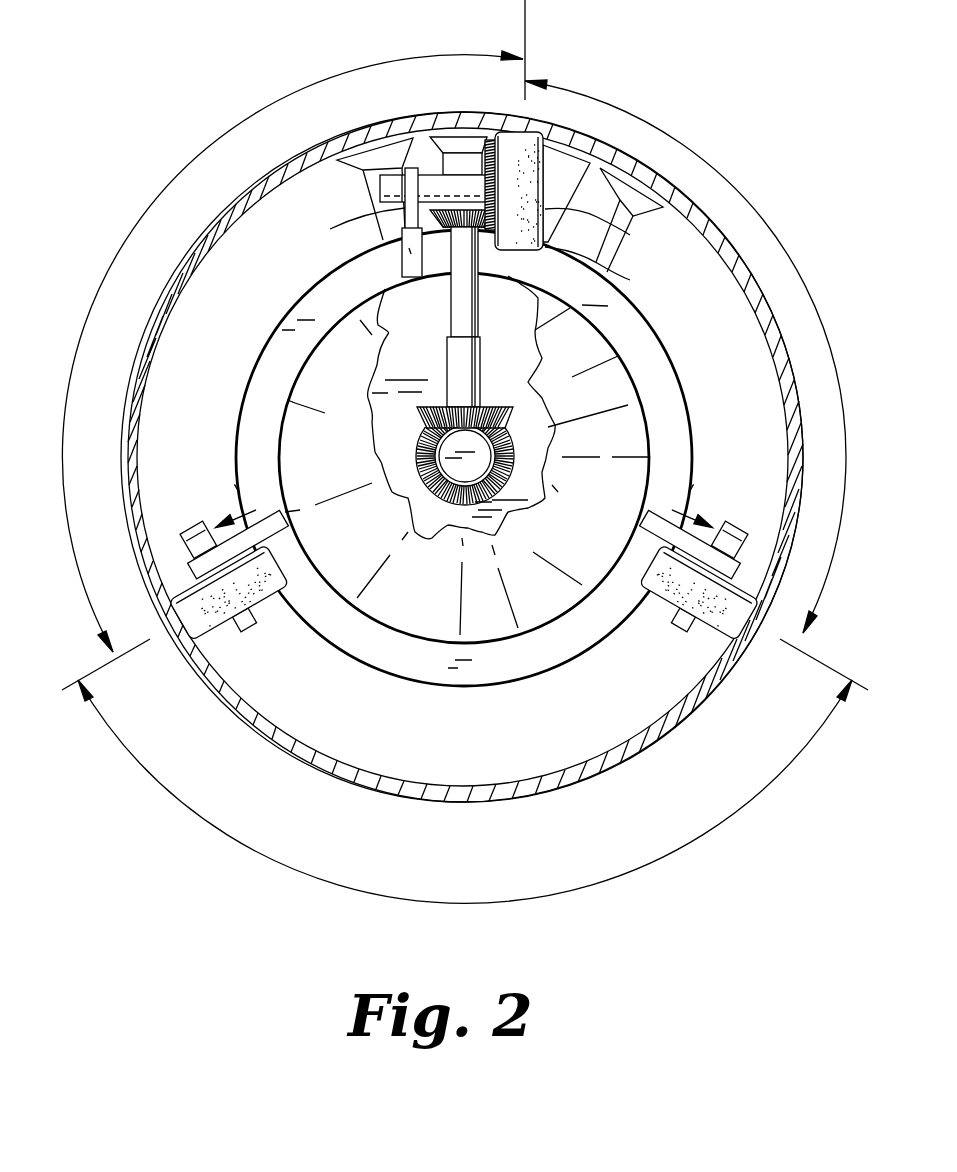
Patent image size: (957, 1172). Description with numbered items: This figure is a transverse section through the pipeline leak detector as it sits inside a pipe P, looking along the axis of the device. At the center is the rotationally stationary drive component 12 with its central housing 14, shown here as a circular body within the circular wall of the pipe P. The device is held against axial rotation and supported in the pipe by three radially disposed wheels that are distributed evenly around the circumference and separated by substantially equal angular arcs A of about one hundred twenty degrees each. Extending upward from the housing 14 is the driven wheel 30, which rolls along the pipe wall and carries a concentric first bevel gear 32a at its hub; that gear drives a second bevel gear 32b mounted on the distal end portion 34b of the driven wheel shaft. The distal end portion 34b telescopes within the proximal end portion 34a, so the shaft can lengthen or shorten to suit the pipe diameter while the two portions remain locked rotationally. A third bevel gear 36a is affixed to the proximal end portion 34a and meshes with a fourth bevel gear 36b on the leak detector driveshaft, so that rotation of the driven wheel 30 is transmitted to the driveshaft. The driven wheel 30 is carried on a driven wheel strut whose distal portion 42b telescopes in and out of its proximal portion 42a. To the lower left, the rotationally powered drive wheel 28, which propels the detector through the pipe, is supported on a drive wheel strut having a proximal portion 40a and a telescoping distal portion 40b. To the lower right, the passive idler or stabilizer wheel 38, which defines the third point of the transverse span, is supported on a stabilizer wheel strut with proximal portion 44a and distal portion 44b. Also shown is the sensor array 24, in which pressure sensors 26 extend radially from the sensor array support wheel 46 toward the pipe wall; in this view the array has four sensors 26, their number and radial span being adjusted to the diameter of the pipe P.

The drive component 12 is at (258, 268).
The central housing 14 is at (670, 392).
The leak sensor array 24 is at (656, 242).
The pressure sensors 26 is at (487, 134).
The drive wheel 28 is at (170, 640).
The driven wheel 30 is at (603, 238).
The first bevel gear 32a is at (490, 131).
The second bevel gear 32b is at (380, 200).
The proximal end portion of driven wheel shaft 34a is at (449, 348).
The distal end portion of driven wheel shaft 34b is at (450, 323).
The third bevel gear 36a is at (377, 447).
The fourth bevel gear 36b is at (440, 485).
The idler or stabilizer wheel 38 is at (658, 626).
The proximal portion of drive wheel strut 40a is at (283, 510).
The distal portion of drive wheel strut 40b is at (208, 524).
The proximal portion of driven wheel strut 42a is at (402, 258).
The distal portion of driven wheel strut 42b is at (404, 200).
The proximal portion of stabilizer wheel strut 44a is at (647, 512).
The distal portion of stabilizer wheel strut 44b is at (730, 526).
The sensor array support wheel 46 is at (262, 368).
The angular arcs A is at (705, 165).
The pipe P is at (152, 307).